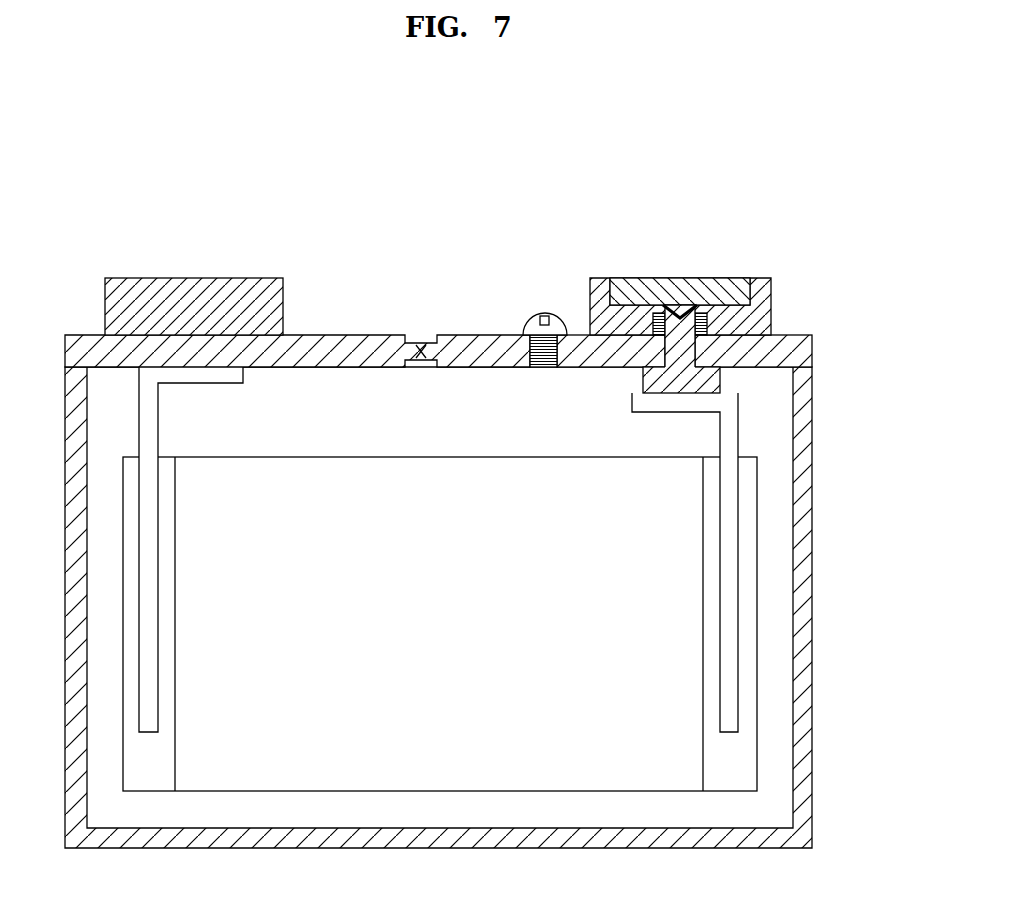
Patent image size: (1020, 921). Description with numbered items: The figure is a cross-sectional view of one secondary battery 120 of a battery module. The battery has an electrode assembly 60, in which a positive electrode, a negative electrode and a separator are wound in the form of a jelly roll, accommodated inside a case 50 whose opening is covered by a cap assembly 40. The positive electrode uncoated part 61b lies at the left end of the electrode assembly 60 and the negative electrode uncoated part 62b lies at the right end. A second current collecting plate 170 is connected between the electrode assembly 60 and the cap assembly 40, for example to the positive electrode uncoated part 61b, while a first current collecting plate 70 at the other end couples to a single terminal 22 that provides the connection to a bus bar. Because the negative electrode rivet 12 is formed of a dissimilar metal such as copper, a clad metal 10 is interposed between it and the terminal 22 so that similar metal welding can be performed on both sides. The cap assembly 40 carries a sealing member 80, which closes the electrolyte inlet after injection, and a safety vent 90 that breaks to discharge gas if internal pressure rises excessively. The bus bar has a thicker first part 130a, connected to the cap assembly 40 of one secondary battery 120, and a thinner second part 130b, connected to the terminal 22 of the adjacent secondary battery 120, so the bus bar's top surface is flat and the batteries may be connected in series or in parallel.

The secondary battery 120 is at (723, 273).
The first part of the bus bar 130a is at (188, 278).
The second part of the bus bar 130b is at (680, 290).
The terminal 22 is at (764, 278).
The safety vent 90 is at (421, 343).
The sealing member 80 is at (545, 313).
The cap assembly 40 is at (797, 352).
The clad metal 10 is at (656, 341).
The negative electrode rivet 12 is at (723, 382).
The second current collecting plate 170 is at (148, 418).
The first current collecting plate 70 is at (724, 430).
The case 50 is at (805, 581).
The electrode assembly 60 is at (452, 637).
The positive electrode uncoated part 61b is at (164, 769).
The negative electrode uncoated part 62b is at (746, 769).